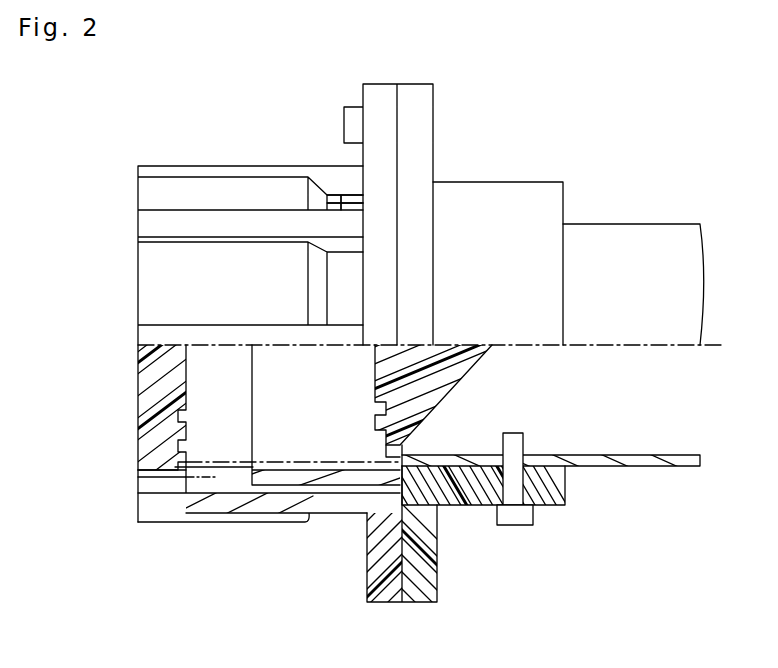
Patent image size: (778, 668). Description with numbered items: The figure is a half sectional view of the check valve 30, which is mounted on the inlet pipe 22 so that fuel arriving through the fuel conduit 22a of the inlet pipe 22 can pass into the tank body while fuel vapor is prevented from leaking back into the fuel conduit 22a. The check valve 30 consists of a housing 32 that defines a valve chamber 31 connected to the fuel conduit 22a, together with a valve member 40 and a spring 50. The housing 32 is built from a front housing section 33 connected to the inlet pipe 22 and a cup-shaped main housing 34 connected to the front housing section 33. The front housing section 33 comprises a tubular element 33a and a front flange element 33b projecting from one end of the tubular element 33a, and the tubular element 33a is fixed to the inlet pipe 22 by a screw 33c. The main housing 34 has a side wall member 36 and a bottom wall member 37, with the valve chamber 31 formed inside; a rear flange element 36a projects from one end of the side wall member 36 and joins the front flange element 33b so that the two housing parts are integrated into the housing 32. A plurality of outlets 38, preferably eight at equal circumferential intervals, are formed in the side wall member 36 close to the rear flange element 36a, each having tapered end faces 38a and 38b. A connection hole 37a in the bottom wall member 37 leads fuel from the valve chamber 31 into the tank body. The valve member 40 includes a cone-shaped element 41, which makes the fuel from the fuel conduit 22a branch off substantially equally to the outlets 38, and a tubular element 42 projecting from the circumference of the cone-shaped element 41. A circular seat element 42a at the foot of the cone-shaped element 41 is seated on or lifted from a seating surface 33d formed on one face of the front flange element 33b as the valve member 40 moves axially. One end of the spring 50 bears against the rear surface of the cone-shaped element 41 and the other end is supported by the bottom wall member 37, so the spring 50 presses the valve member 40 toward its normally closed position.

The inlet pipe 22 is at (645, 224).
The fuel conduit 22a is at (655, 466).
The check valve 30 is at (458, 102).
The valve chamber 31 is at (192, 395).
The housing 32 is at (470, 600).
The front housing section 33 is at (488, 182).
The tubular element 33a is at (555, 502).
The front flange element 33b is at (423, 603).
The screw 33c is at (515, 526).
The seating surface 33d is at (437, 518).
The main housing 34 is at (252, 166).
The side wall member 36 is at (191, 166).
The rear flange element 36a is at (378, 603).
The bottom wall member 37 is at (138, 268).
The connection hole 37a is at (148, 476).
The outlets 38 is at (340, 205).
The tapered end face 38a is at (372, 515).
The tapered end face 38b is at (313, 522).
The valve member 40 is at (470, 395).
The cone-shaped element 41 is at (475, 362).
The tubular element 42 is at (280, 483).
The circular seat element 42a is at (382, 446).
The spring 50 is at (186, 462).